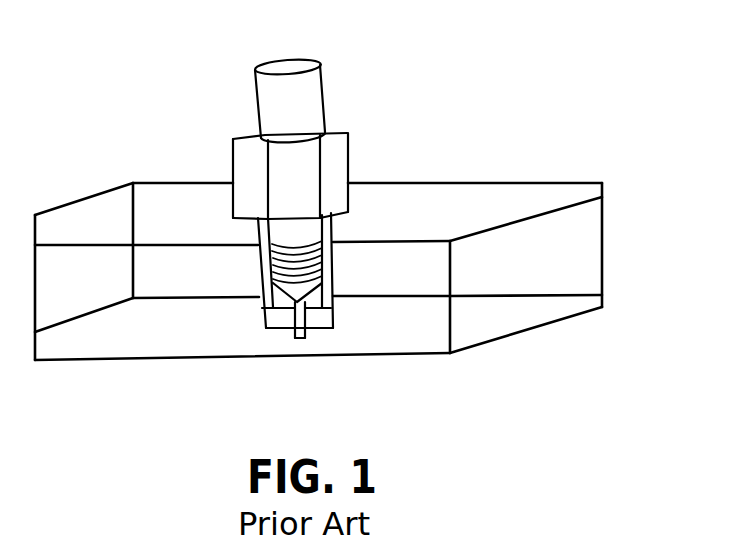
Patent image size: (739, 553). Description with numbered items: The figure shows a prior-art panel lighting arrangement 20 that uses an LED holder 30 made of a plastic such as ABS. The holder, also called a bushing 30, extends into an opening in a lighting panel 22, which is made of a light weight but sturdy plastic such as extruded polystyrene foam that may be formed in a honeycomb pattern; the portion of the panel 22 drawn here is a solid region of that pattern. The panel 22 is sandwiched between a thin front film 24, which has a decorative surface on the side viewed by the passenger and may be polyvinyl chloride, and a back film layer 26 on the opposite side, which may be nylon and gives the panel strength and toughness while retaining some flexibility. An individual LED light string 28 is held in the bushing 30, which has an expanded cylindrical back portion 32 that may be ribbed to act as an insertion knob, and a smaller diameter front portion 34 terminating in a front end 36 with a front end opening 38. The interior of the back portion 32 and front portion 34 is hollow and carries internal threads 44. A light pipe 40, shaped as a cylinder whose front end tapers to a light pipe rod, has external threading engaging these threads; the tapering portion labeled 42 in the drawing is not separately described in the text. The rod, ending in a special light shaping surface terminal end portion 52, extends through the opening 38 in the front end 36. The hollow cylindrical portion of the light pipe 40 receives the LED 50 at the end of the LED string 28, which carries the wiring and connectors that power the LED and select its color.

The panel lighting arrangement 20 is at (577, 234).
The lighting panel 22 is at (573, 293).
The front film 24 is at (560, 332).
The back film layer 26 is at (517, 171).
The LED light string 28 is at (310, 98).
The LED holder 30 is at (292, 120).
The back portion 32 is at (338, 170).
The front portion 34 is at (277, 308).
The front end 36 is at (332, 344).
The front end opening 38 is at (295, 328).
The light pipe 40 is at (305, 318).
The conical tip 42 is at (314, 297).
The internal threads 44 is at (278, 284).
The LED 50 is at (322, 246).
The light shaping surface terminal end portion 52 is at (299, 332).